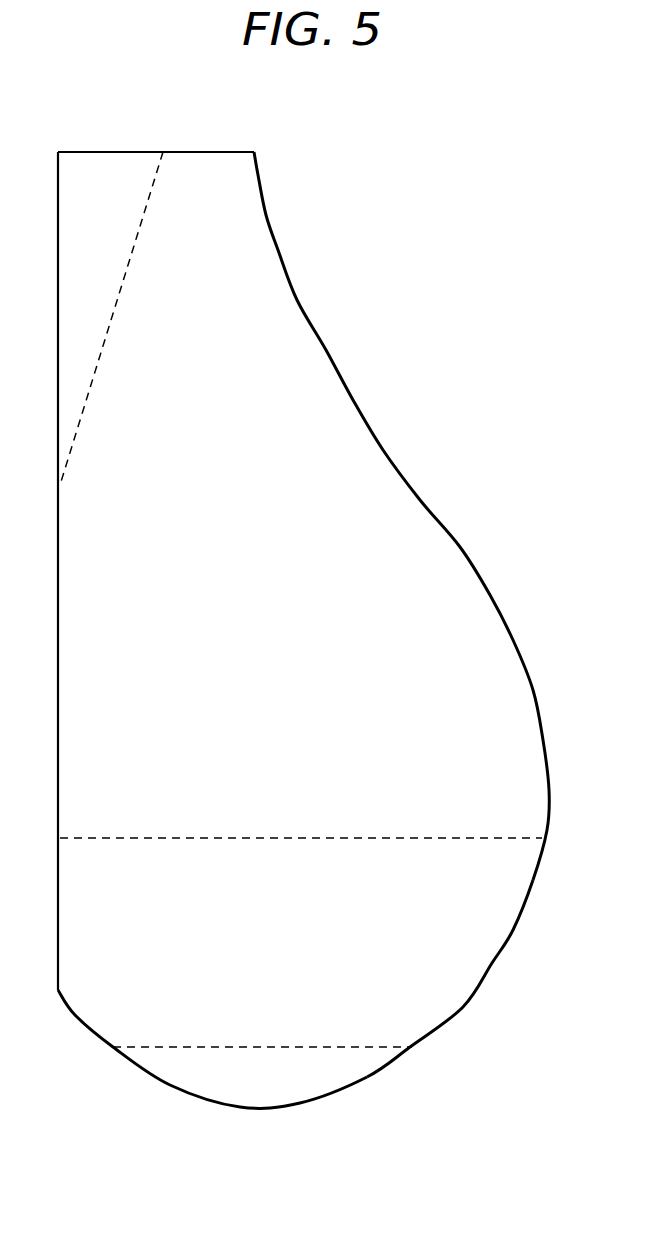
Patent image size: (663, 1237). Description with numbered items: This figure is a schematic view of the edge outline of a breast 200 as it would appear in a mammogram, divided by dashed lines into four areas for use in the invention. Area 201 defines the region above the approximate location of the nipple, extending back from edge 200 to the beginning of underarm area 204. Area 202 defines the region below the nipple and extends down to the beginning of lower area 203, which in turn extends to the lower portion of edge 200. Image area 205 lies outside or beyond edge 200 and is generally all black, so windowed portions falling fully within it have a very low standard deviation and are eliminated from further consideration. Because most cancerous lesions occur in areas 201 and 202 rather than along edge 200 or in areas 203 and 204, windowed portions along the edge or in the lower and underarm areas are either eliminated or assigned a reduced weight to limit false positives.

The edge outline of a breast 200 is at (460, 547).
The area above the nipple 201 is at (280, 490).
The area below the nipple 202 is at (481, 950).
The lower area 203 is at (255, 1092).
The underarm area 204 is at (104, 158).
The image area beyond the edge 205 is at (541, 255).